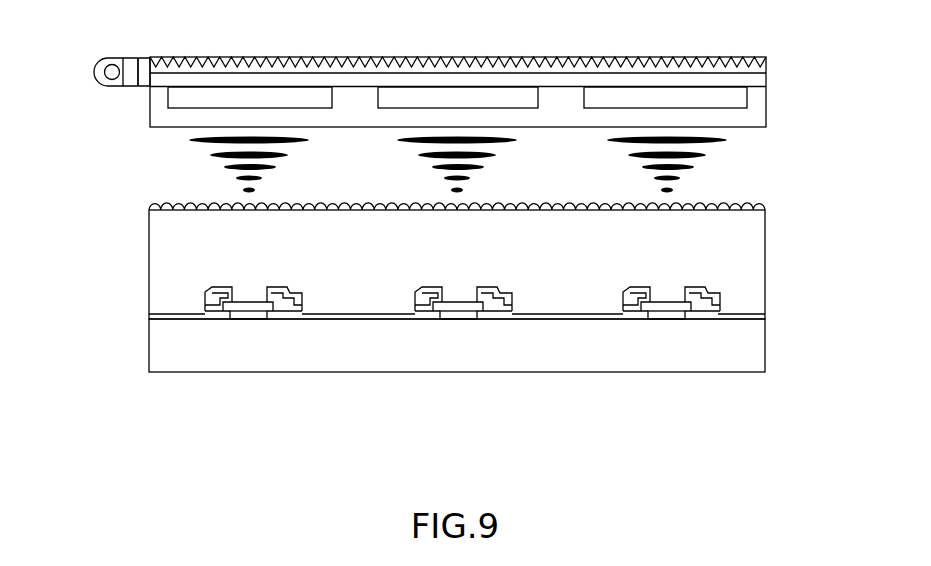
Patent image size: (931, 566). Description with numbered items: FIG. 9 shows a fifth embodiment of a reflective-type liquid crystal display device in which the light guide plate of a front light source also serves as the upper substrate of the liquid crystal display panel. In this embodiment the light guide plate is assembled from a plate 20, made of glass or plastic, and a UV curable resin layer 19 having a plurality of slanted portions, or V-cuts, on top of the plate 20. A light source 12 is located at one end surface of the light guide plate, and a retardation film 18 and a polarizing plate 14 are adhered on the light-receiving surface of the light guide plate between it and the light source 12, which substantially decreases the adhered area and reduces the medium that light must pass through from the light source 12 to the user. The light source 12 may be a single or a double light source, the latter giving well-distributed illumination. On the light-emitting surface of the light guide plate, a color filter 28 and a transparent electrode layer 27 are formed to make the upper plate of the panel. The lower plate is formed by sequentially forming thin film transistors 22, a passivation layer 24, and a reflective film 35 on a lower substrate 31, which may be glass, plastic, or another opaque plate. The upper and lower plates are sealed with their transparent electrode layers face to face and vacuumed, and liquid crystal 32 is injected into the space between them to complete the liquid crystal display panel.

The light source 12 is at (108, 70).
The polarizing plate 14 is at (128, 67).
The retardation film 18 is at (143, 80).
The UV curable resin layer 19 is at (448, 62).
The plate 20 is at (602, 82).
The thin film transistors 22 is at (708, 296).
The passivation layer 24 is at (737, 251).
The transparent electrode layer 27 is at (757, 110).
The color filter 28 is at (692, 98).
The lower substrate 31 is at (737, 340).
The liquid crystal 32 is at (203, 164).
The reflective film 35 is at (757, 205).